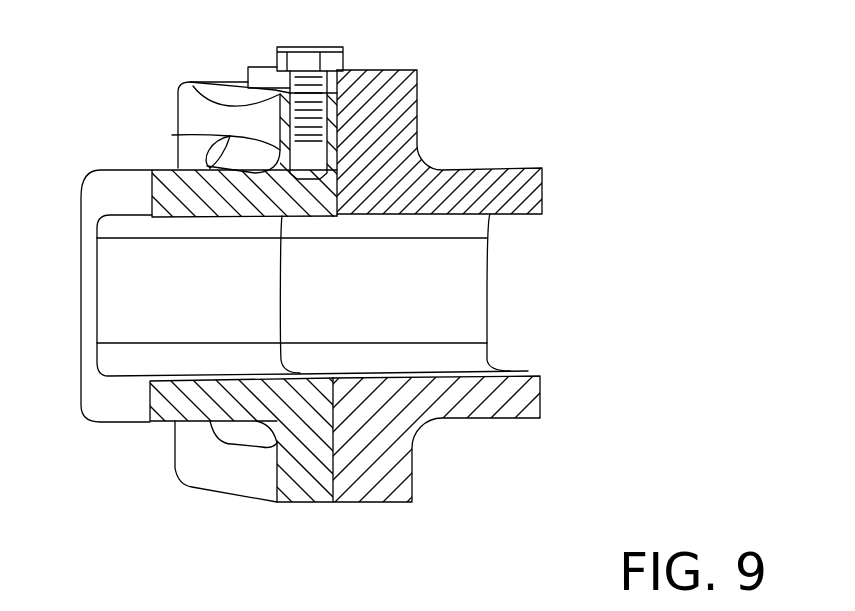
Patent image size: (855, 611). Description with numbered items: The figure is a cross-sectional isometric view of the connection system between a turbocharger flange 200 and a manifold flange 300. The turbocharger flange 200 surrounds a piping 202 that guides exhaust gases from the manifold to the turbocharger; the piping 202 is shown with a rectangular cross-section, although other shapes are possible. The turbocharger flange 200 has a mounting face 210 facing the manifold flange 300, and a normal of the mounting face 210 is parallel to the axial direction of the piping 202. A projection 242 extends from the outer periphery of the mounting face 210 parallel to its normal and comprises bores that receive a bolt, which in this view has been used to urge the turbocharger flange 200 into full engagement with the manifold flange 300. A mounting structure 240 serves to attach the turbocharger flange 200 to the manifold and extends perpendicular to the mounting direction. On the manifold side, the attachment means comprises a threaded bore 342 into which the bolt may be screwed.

The turbocharger flange 200 is at (393, 130).
The piping 202 is at (452, 297).
The mounting face 210 is at (337, 185).
The mounting structure 240 is at (247, 73).
The projection 242 is at (205, 82).
The threaded bore 342 is at (308, 160).
The manifold flange 300 is at (212, 465).